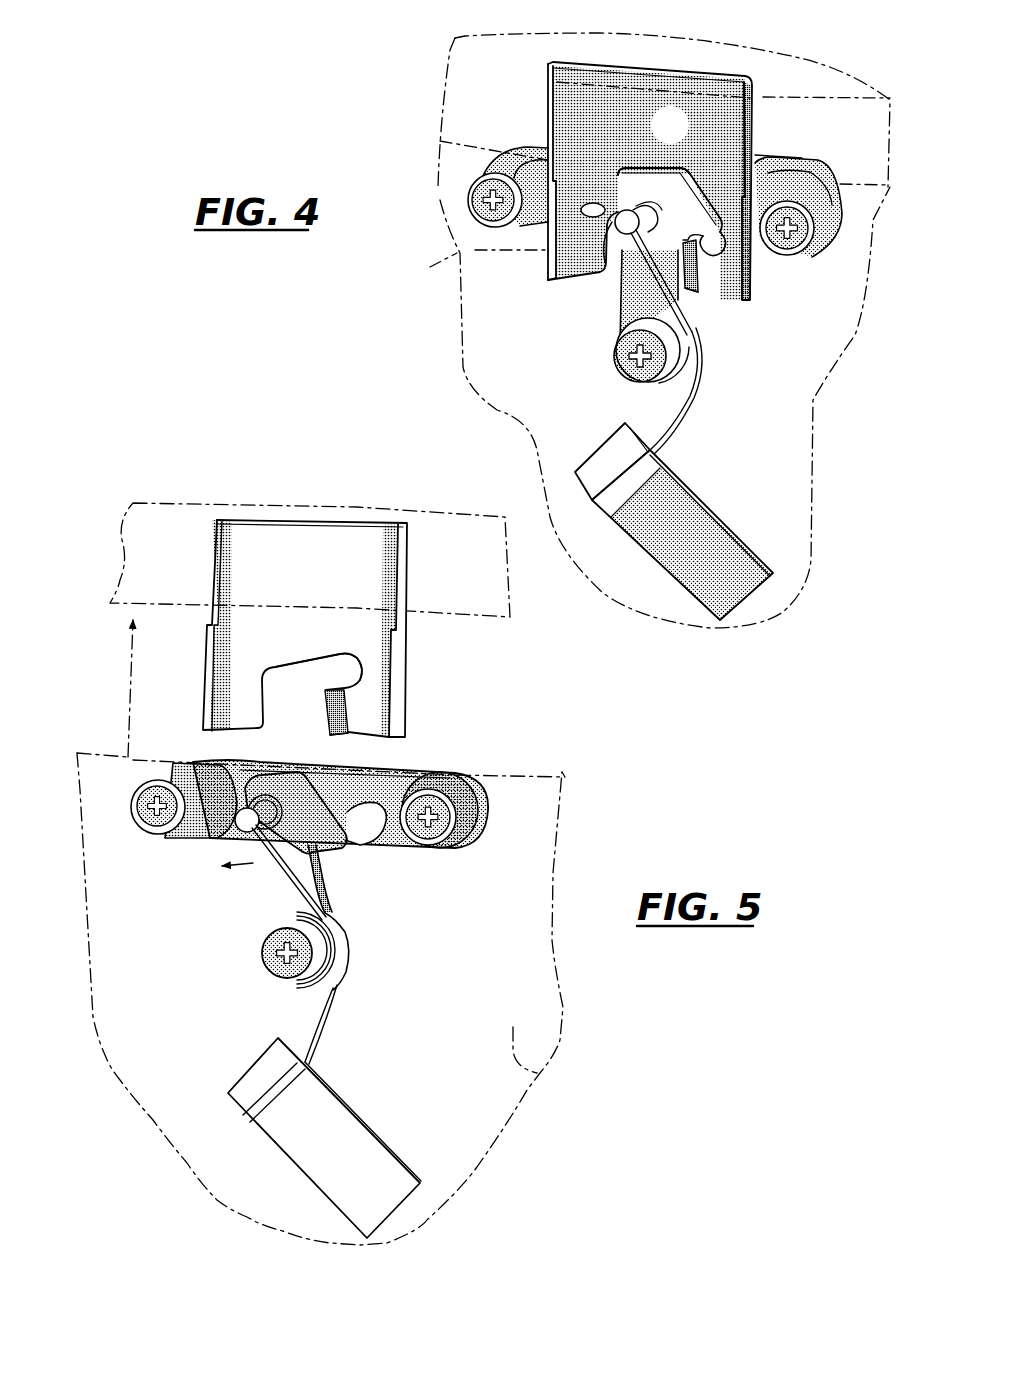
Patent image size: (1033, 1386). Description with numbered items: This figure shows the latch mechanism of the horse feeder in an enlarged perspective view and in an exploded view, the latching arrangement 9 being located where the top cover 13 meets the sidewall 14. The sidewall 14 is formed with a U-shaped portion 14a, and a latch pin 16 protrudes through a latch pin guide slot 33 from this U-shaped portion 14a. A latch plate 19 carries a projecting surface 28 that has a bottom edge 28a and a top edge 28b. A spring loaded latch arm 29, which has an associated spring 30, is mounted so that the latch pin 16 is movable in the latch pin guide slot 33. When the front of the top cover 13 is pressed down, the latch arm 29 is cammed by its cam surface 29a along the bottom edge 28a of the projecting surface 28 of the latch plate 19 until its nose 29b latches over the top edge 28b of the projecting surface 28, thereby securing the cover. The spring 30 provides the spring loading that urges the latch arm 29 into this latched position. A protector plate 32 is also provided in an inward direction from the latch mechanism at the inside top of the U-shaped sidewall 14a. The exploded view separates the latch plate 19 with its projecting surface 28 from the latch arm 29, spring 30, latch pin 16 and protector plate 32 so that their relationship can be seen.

In FIG. 4, the fastening assembly 9 is at (481, 130).
In FIG. 5, the fastening assembly 9 is at (184, 800).
In FIG. 4, the top cover 13 is at (456, 72).
In FIG. 5, the top cover 13 is at (188, 497).
In FIG. 4, the sidewall 14 is at (461, 380).
In FIG. 5, the sidewall 14 is at (555, 868).
In FIG. 4, the U-shaped portion 14a is at (457, 183).
In FIG. 5, the U-shaped portion 14a is at (557, 1068).
In FIG. 4, the latch pin 16 is at (620, 246).
In FIG. 5, the latch pin 16 is at (240, 827).
In FIG. 4, the latch plate 19 is at (703, 120).
In FIG. 5, the latch plate 19 is at (380, 650).
In FIG. 4, the projecting surface 28 is at (698, 290).
In FIG. 5, the projecting surface 28 is at (345, 710).
In FIG. 4, the bottom edge 28a is at (697, 300).
In FIG. 5, the bottom edge 28a is at (342, 737).
In FIG. 4, the top edge 28b is at (678, 178).
In FIG. 5, the top edge 28b is at (332, 677).
In FIG. 4, the spring loaded latch arm 29 is at (705, 288).
In FIG. 5, the spring loaded latch arm 29 is at (347, 883).
In FIG. 4, the cam surface 29a is at (750, 150).
In FIG. 5, the cam surface 29a is at (367, 843).
In FIG. 4, the nose 29b is at (727, 265).
In FIG. 5, the nose 29b is at (360, 850).
In FIG. 4, the spring 30 is at (612, 312).
In FIG. 5, the spring 30 is at (283, 873).
In FIG. 5, the protector plate 32 is at (427, 767).
In FIG. 4, the latch pin guide slot 33 is at (473, 250).
In FIG. 5, the latch pin guide slot 33 is at (347, 767).